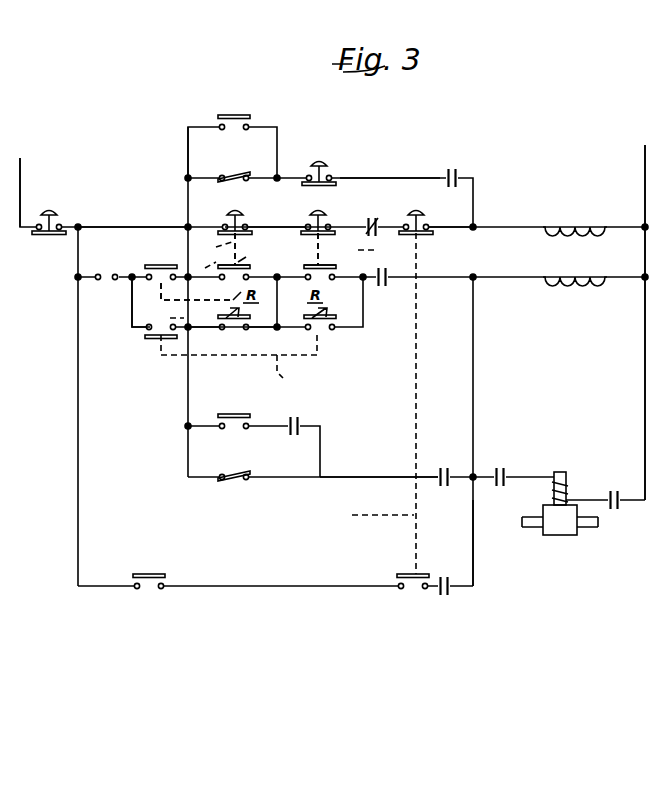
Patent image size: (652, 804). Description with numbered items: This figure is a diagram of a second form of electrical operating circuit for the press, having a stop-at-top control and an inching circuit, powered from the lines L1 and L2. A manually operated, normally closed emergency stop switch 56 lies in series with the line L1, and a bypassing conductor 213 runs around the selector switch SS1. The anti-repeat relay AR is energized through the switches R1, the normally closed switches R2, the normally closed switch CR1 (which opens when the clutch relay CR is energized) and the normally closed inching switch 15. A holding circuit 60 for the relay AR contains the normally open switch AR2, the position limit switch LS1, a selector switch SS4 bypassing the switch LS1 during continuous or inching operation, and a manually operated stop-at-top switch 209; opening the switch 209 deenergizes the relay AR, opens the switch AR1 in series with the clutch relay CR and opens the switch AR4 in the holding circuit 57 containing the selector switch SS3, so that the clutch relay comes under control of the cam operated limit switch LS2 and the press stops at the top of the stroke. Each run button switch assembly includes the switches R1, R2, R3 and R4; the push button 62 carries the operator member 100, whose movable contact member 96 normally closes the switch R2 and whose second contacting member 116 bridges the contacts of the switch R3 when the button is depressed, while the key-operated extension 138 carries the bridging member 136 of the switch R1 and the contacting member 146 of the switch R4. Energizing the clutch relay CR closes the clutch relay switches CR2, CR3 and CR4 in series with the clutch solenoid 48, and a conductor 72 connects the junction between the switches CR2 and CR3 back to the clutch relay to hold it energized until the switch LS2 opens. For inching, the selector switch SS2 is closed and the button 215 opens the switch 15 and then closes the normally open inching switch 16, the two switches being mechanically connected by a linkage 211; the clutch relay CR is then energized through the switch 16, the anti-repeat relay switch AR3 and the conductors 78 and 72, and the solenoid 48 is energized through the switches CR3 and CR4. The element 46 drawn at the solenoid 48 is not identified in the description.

The emergency stop switch 56 is at (46, 234).
The bypassing conductor 213 is at (103, 225).
The stop at the top switch 209 is at (306, 172).
The holding circuit 60 is at (385, 176).
The inching button 215 is at (415, 212).
The normally closed inching switch 15 is at (426, 221).
The push button 62 is at (233, 219).
The movable circular contact member 96 is at (282, 249).
The switch operator member 100 is at (291, 254).
The second movable circular contacting member 116 is at (247, 266).
The circular bridging contacting member 136 is at (148, 289).
The operator extension 138 is at (228, 337).
The contacting member 146 is at (258, 322).
The conductor 72 is at (476, 334).
The holding circuit 57 is at (378, 477).
The clutch solenoid 48 is at (568, 482).
The valve 46 is at (565, 535).
The conductor 78 is at (473, 530).
The linkage 211 is at (371, 403).
The normally open inching switch 16 is at (403, 592).
The line L1 is at (20, 167).
The line L2 is at (645, 162).
The selector switch SS1 is at (98, 283).
The selector switch SS2 is at (148, 574).
The selector switch SS3 is at (230, 432).
The selector switch SS4 is at (208, 122).
The position limit switch LS1 is at (238, 174).
The cam operated switch LS2 is at (232, 488).
The switch R1 is at (159, 268).
The normally closed switch R2 is at (243, 224).
The run button switch R3 is at (250, 272).
The switch R4 is at (235, 339).
The normally closed switch CR1 is at (371, 217).
The clutch relay switch CR2 is at (443, 467).
The clutch relay switch CR3 is at (503, 467).
The clutch relay switch CR4 is at (614, 510).
The normally open switch AR1 is at (384, 289).
The normally open switch AR2 is at (455, 168).
The anti-repeat relay switch AR3 is at (443, 597).
The switch AR4 is at (300, 421).
The anti-repeat relay AR is at (592, 222).
The clutch relay CR is at (586, 270).